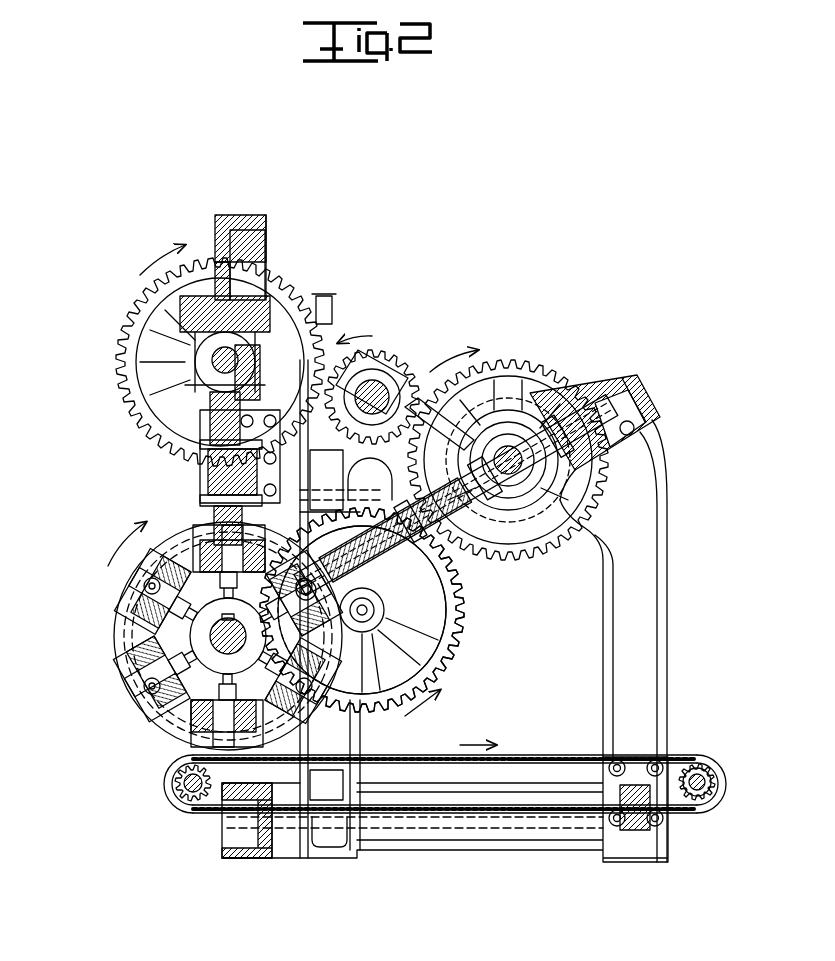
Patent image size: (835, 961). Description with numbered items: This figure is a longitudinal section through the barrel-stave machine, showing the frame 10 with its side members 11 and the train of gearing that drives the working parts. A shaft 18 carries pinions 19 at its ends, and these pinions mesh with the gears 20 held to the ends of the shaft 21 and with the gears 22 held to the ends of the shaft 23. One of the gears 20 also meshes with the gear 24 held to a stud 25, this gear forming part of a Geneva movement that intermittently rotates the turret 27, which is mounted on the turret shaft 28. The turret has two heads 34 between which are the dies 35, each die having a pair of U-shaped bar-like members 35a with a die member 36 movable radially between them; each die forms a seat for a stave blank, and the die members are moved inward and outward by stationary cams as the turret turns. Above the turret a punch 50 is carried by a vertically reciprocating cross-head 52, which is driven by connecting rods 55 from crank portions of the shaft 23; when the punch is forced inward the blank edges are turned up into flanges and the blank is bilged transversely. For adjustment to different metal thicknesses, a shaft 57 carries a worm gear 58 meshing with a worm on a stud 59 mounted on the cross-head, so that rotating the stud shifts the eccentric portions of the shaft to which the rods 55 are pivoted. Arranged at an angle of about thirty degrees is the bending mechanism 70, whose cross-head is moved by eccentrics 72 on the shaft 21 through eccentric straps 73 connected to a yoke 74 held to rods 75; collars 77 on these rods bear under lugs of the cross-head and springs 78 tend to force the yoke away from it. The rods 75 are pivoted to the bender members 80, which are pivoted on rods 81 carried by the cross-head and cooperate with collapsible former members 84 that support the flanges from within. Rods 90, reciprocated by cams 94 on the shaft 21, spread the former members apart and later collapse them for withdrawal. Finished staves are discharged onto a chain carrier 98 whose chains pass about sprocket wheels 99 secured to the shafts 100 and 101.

The frame 10 is at (462, 641).
The side members 11 is at (662, 678).
The shaft 18 is at (376, 395).
The pinions 19 is at (378, 350).
The gears 20 is at (506, 440).
The shaft 21 is at (528, 395).
The gears 22 is at (146, 298).
The shaft 23 is at (208, 368).
The gear 24 is at (455, 652).
The stud 25 is at (375, 652).
The turret 27 is at (67, 618).
The turret shaft 28 is at (214, 644).
The heads 34 is at (178, 720).
The dies 35 is at (90, 664).
The bar-like members 35a is at (160, 642).
The die member 36 is at (146, 584).
The punch 50 is at (212, 500).
The cross-head 52 is at (206, 470).
The connecting rods 55 is at (242, 380).
The shaft 57 is at (212, 420).
The worm gear 58 is at (248, 402).
The stud 59 is at (200, 446).
The bending mechanism 70 is at (496, 566).
The eccentrics 72 is at (548, 540).
The eccentric straps 73 is at (483, 404).
The yoke 74 is at (458, 410).
The rods 75 is at (400, 590).
The collars 77 is at (452, 600).
The spring 78 is at (433, 624).
The bender members 80 is at (312, 512).
The rods 81 is at (328, 512).
The former members 84 is at (362, 619).
The rods 90 is at (370, 479).
The cams 94 is at (469, 346).
The chain carrier 98 is at (400, 752).
The sprocket wheels 99 is at (697, 764).
The shaft 100 is at (178, 790).
The shaft 101 is at (697, 798).